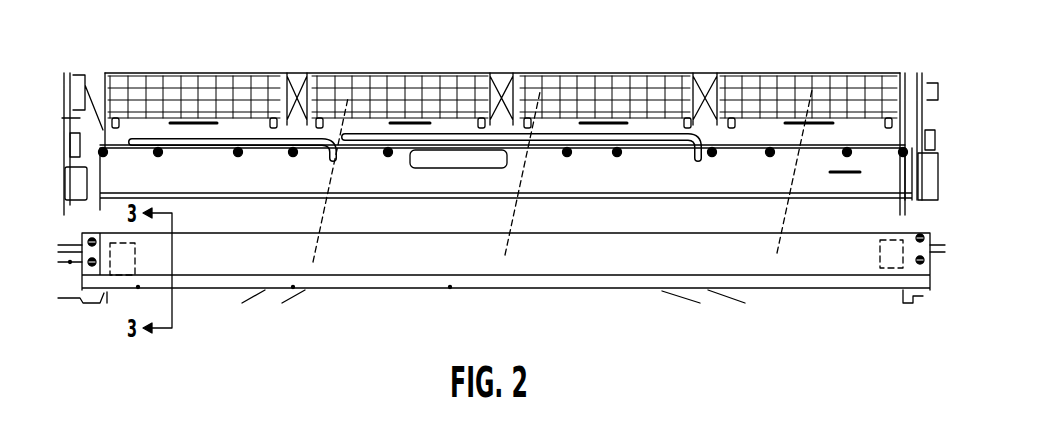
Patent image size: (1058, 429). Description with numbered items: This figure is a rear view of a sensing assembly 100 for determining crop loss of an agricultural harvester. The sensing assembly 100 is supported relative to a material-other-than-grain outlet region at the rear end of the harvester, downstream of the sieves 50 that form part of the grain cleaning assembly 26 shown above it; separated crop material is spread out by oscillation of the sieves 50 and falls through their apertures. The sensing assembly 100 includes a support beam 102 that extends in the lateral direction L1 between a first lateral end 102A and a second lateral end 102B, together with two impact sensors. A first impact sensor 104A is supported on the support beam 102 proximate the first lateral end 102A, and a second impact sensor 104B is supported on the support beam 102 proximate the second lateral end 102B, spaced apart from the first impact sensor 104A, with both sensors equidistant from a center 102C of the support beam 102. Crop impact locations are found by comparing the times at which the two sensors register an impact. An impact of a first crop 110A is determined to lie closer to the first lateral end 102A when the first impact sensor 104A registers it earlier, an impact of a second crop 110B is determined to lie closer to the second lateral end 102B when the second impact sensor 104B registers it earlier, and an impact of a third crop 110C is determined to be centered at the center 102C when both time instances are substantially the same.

The grain cleaning assembly 26 is at (235, 74).
The sieves 50 is at (617, 97).
The sensing assembly 100 is at (683, 234).
The support beam 102 is at (600, 262).
The first lateral end 102A is at (85, 275).
The second lateral end 102B is at (932, 258).
The center 102C is at (505, 265).
The first impact sensor 104A is at (112, 275).
The second impact sensor 104B is at (878, 262).
The first crop 110A is at (313, 262).
The second crop 110B is at (777, 253).
The third crop 110C is at (505, 255).
The lateral direction L1 is at (800, 368).